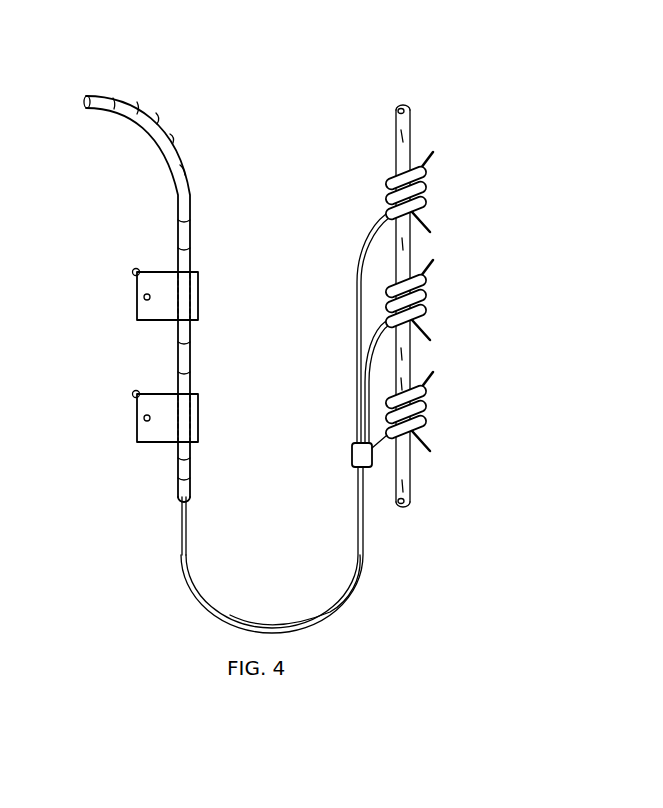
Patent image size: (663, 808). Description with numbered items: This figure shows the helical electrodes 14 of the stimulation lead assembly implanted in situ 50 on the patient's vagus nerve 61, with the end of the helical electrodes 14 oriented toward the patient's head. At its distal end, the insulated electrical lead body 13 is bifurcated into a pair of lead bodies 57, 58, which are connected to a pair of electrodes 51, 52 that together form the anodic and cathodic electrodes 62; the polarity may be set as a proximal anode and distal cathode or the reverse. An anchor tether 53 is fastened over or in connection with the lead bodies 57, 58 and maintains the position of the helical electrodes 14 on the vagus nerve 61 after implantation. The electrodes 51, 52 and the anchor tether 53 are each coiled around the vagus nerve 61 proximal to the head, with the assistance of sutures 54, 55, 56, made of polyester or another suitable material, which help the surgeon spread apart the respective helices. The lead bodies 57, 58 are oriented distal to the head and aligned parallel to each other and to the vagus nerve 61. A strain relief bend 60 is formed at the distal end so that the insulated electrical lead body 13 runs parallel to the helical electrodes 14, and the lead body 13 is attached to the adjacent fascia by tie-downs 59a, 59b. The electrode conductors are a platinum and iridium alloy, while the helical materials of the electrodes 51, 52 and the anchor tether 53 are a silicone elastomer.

The insulated electrical lead body 13 is at (161, 124).
The helical electrodes 14 is at (472, 120).
The in situ 50 is at (378, 70).
The electrode 51 is at (437, 187).
The electrode 52 is at (437, 295).
The anchor tether 53 is at (437, 406).
The suture 54 is at (434, 160).
The suture 55 is at (434, 268).
The suture 56 is at (434, 380).
The lead body 57 is at (358, 230).
The lead body 58 is at (385, 314).
The tie-down 59a is at (137, 298).
The tie-down 59b is at (137, 421).
The strain relief bend 60 is at (378, 540).
The vagus nerve 61 is at (396, 150).
The anodic and cathodic electrodes 62 is at (172, 506).